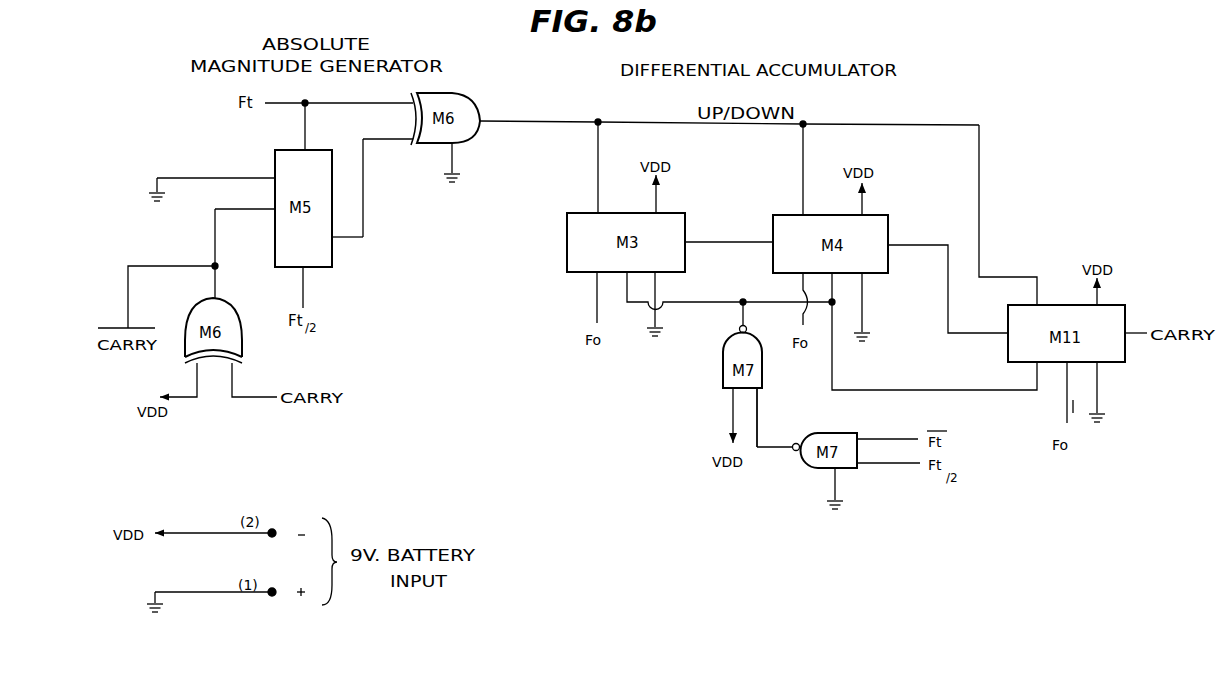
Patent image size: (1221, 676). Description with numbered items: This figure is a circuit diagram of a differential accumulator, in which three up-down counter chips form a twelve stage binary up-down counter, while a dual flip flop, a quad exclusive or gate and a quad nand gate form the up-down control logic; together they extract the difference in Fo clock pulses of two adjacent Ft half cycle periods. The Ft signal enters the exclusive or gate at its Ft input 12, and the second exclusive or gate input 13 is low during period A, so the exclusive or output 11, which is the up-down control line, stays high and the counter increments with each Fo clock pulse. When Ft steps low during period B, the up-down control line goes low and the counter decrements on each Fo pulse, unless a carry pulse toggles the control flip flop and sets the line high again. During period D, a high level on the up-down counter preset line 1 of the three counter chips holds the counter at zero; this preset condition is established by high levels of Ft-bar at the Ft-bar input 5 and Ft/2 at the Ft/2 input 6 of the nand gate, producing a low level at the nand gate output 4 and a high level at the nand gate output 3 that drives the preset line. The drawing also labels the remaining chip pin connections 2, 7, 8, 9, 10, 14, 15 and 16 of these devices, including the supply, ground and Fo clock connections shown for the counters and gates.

The up-down counter preset line 1 is at (832, 357).
The pin 2 of NAND M7 2 is at (763, 417).
The nand gate output (preset line) 3 is at (903, 332).
The nand gate output 4 is at (460, 340).
The Ft-bar input 5 is at (592, 331).
The Ft/2 input 6 is at (576, 414).
The pin 7 ground / carry output 7 is at (792, 318).
The pin 8 input of M5 8 is at (312, 126).
The pin 9 / VDD supply 9 is at (632, 231).
The pin 10 up/down input 10 is at (682, 215).
The exclusive or output (up-down control line) 11 is at (597, 167).
The Ft input of exclusive or gate 12 is at (339, 161).
The exclusive or gate input 13 is at (749, 265).
The pin 14 VDD 14 is at (178, 382).
The pin 15 Fo output 15 is at (832, 347).
The pin 16 VDD 16 is at (904, 250).